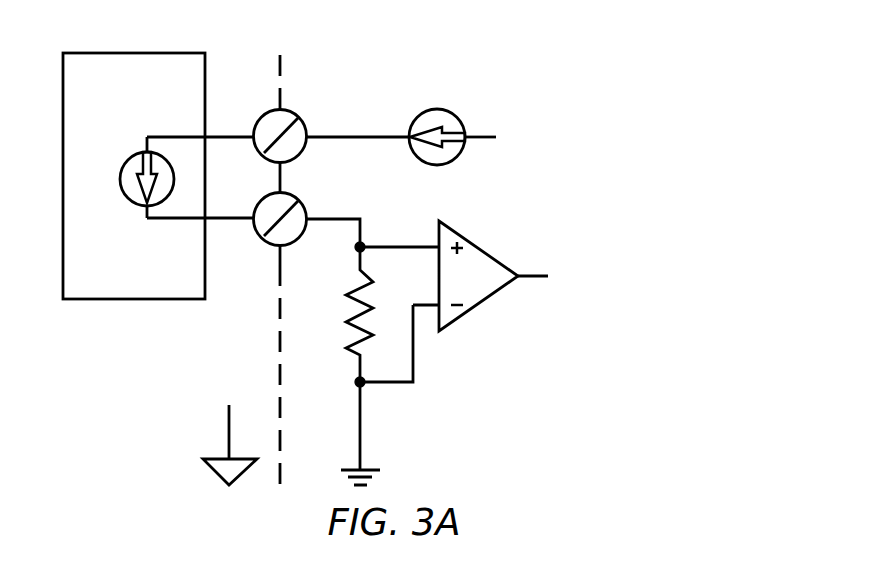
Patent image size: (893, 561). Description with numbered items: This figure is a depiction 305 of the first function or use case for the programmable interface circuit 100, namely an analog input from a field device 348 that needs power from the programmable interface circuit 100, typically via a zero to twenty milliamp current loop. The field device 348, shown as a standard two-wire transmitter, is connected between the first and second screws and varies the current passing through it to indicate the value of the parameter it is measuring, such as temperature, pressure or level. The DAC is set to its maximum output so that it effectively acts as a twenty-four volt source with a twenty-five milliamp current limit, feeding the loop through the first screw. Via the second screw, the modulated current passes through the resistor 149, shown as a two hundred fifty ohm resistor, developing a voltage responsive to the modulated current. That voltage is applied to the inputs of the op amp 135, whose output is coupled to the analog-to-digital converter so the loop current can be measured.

The field device 348 is at (131, 53).
The programmable interface circuit 100 is at (383, 73).
The depiction 305 is at (640, 48).
The operational amplifier 135 is at (480, 247).
The resistor 149 is at (369, 314).